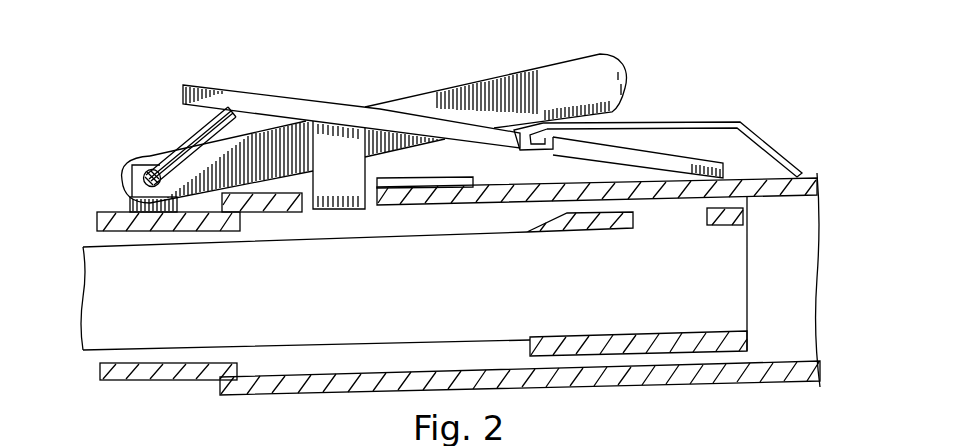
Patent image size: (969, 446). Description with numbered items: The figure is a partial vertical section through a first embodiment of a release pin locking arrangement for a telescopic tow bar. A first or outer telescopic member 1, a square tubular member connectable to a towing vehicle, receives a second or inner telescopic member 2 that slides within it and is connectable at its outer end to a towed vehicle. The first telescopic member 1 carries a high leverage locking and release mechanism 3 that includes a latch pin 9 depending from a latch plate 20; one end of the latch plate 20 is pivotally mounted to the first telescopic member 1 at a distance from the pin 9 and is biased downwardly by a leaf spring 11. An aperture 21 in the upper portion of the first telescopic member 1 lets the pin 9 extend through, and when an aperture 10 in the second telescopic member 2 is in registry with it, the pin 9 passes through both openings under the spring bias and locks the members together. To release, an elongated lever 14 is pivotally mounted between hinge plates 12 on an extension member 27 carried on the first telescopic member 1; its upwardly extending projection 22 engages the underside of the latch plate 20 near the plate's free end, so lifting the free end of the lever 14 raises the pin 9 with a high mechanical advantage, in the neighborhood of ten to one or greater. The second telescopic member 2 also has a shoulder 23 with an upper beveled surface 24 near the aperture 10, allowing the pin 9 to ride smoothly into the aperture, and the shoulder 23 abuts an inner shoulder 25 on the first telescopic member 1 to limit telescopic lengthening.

The first telescopic member 1 is at (752, 178).
The second telescopic member 2 is at (749, 294).
The high leverage locking and release mechanism 3 is at (425, 87).
The latch pin 9 is at (337, 162).
The aperture 10 is at (676, 216).
The leaf spring 11 is at (700, 120).
The hinge plates 12 is at (127, 205).
The lever 14 is at (130, 156).
The latch plate 20 is at (264, 60).
The aperture 21 is at (374, 221).
The projection 22 is at (205, 136).
The shoulder 23 is at (530, 340).
The beveled surface 24 is at (528, 233).
The inner shoulder 25 is at (232, 374).
The extension member 27 is at (173, 380).